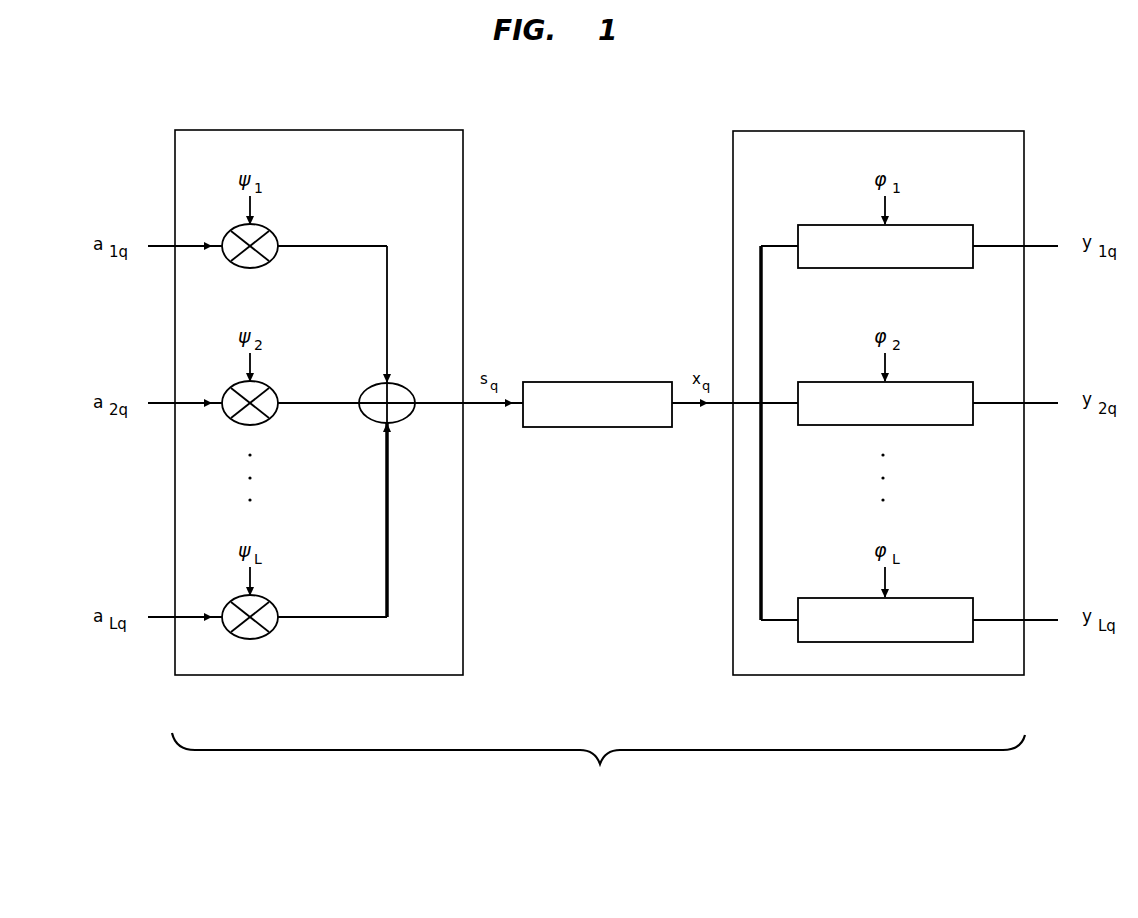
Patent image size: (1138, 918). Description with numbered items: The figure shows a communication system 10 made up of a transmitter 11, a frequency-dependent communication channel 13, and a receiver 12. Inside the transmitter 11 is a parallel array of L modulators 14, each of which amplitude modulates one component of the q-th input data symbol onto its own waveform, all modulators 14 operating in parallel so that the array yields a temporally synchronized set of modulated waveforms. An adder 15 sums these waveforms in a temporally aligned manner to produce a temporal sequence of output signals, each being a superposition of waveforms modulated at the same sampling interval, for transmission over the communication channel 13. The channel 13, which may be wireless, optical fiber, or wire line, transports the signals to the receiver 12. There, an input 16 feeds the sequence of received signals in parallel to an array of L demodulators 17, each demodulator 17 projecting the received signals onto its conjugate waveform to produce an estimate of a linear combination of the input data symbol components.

The communication system 10 is at (598, 764).
The transmitter 11 is at (436, 168).
The receiver 12 is at (992, 168).
The frequency-dependent communication channel 13 is at (580, 428).
The modulator 14 is at (238, 268).
The adder 15 is at (378, 424).
The input 16 is at (779, 410).
The demodulator 17 is at (863, 268).